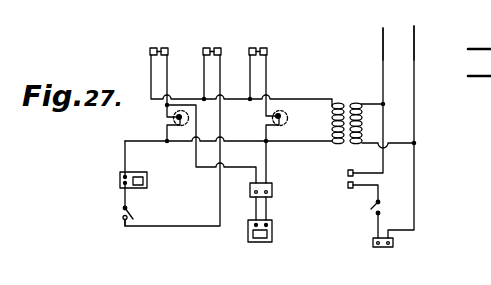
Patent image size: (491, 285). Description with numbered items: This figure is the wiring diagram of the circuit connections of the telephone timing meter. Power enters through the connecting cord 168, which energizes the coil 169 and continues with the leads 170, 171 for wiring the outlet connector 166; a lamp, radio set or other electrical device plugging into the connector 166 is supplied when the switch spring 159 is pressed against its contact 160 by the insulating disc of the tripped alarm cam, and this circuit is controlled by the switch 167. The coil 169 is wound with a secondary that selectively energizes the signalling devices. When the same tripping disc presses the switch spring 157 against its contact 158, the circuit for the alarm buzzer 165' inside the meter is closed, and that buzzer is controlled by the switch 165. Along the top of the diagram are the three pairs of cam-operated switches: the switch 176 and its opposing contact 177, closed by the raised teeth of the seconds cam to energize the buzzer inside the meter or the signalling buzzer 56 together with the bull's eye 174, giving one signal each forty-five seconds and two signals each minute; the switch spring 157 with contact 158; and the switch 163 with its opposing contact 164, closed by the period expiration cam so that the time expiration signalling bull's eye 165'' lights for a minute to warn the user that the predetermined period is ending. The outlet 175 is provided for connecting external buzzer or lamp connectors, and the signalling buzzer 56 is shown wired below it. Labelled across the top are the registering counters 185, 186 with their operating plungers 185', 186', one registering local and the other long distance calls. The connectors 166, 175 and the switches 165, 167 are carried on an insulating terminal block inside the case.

The signalling buzzer 56 is at (273, 232).
The switch spring 157 is at (219, 47).
The switch contact 158 is at (207, 47).
The switch spring 159 is at (347, 176).
The switch contact 160 is at (354, 192).
The switch 163 is at (268, 52).
The opposing contact 164 is at (253, 48).
The switch 165 is at (112, 214).
The alarm buzzer 165' is at (148, 174).
The time expiration signalling bull's eye 165'' is at (294, 119).
The connector 166 is at (373, 241).
The switch 167 is at (374, 206).
The connecting cord 168 is at (413, 26).
The coil 169 is at (374, 114).
The lead 170 is at (415, 171).
The lead 171 is at (381, 158).
The bull's eye 174 is at (167, 118).
The outlet 175 is at (273, 188).
The switch 176 is at (166, 47).
The opposing contact 177 is at (149, 51).
The registering counter 185 is at (139, 27).
The operating plunger 185' is at (198, 27).
The registering counter 186 is at (315, 5).
The operating plunger 186' is at (268, 27).